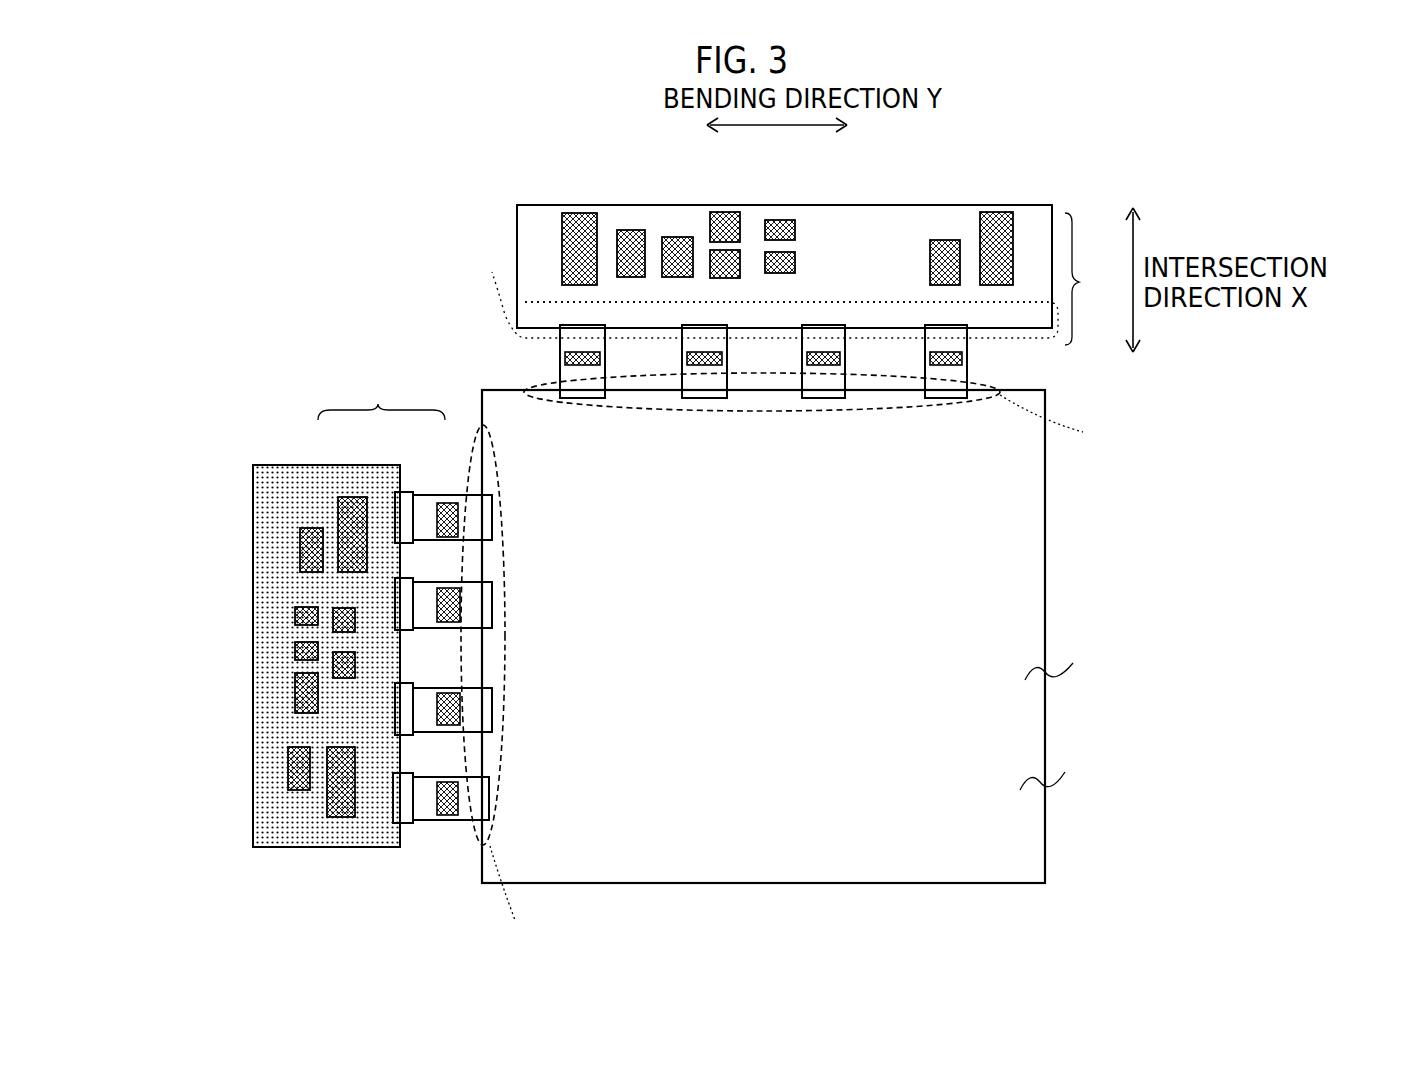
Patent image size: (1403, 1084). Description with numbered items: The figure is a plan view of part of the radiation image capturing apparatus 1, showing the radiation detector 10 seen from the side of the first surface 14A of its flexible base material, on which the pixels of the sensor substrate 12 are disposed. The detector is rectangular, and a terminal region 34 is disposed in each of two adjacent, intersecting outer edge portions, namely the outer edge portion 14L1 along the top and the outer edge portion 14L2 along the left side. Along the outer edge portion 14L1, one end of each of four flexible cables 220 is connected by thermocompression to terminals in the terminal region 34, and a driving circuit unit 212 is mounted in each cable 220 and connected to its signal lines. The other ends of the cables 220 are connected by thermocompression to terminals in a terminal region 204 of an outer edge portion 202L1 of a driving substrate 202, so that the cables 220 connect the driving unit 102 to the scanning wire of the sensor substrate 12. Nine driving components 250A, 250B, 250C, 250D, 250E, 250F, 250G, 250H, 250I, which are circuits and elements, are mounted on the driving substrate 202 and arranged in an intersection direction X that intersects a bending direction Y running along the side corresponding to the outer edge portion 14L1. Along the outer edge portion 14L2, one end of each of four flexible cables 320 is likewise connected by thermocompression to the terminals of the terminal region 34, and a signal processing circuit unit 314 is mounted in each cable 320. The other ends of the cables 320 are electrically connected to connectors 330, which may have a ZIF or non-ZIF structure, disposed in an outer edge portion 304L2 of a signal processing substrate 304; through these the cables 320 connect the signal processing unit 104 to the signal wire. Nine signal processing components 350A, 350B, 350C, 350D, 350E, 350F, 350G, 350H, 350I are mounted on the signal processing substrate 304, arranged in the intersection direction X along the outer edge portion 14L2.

The radiation image capturing apparatus 1 is at (1103, 955).
The radiation detector 10 is at (1050, 765).
The sensor substrate 12 is at (1054, 655).
The first surface 14A is at (1027, 540).
The outer edge portion 14L1 is at (497, 385).
The outer edge portion 14L2 is at (473, 873).
The terminal region 34 is at (787, 661).
The driving unit 102 is at (1095, 279).
The signal processing unit 104 is at (381, 397).
The driving substrate 202 is at (517, 224).
The terminal region 204 is at (759, 288).
The outer edge portion 202L1 is at (545, 331).
The driving circuit unit 212 is at (965, 358).
The cable 220 is at (950, 390).
The driving component 250A is at (583, 212).
The driving component 250B is at (631, 229).
The driving component 250C is at (679, 236).
The driving component 250D is at (728, 279).
The driving component 250E is at (727, 212).
The driving component 250F is at (795, 262).
The driving component 250G is at (779, 220).
The driving component 250H is at (946, 240).
The driving component 250I is at (996, 212).
The signal processing substrate 304 is at (267, 465).
The outer edge portion 304L2 is at (401, 833).
The signal processing circuit unit 314 is at (445, 503).
The cable 320 is at (427, 821).
The connector 330 is at (395, 831).
The signal processing component 350A is at (352, 497).
The signal processing component 350B is at (310, 528).
The signal processing component 350C is at (342, 608).
The signal processing component 350D is at (295, 615).
The signal processing component 350E is at (295, 651).
The signal processing component 350F is at (295, 691).
The signal processing component 350G is at (350, 679).
The signal processing component 350H is at (288, 769).
The signal processing component 350I is at (327, 806).